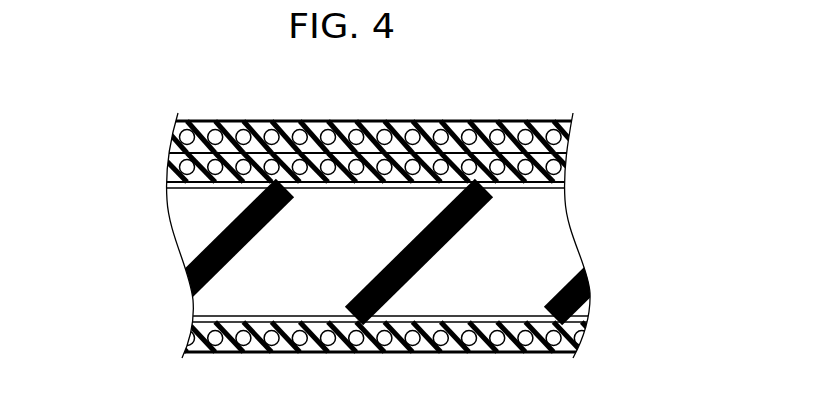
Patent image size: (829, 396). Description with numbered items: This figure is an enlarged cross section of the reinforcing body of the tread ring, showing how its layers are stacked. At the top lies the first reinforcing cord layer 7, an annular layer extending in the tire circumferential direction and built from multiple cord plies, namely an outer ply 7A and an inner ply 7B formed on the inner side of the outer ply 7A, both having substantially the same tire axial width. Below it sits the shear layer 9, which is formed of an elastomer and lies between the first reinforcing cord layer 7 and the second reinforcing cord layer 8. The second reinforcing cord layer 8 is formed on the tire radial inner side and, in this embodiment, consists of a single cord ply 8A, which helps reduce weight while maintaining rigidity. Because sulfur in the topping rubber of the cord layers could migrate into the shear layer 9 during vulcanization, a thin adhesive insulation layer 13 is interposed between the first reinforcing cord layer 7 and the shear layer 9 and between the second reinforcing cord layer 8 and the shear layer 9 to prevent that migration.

The first reinforcing cord layer 7 is at (441, 153).
The outer ply 7A is at (541, 137).
The inner ply 7B is at (545, 176).
The insulation layer 13 is at (233, 188).
The shear layer 9 is at (547, 258).
The second reinforcing cord layer 8 is at (439, 338).
The cord ply 8A is at (572, 337).